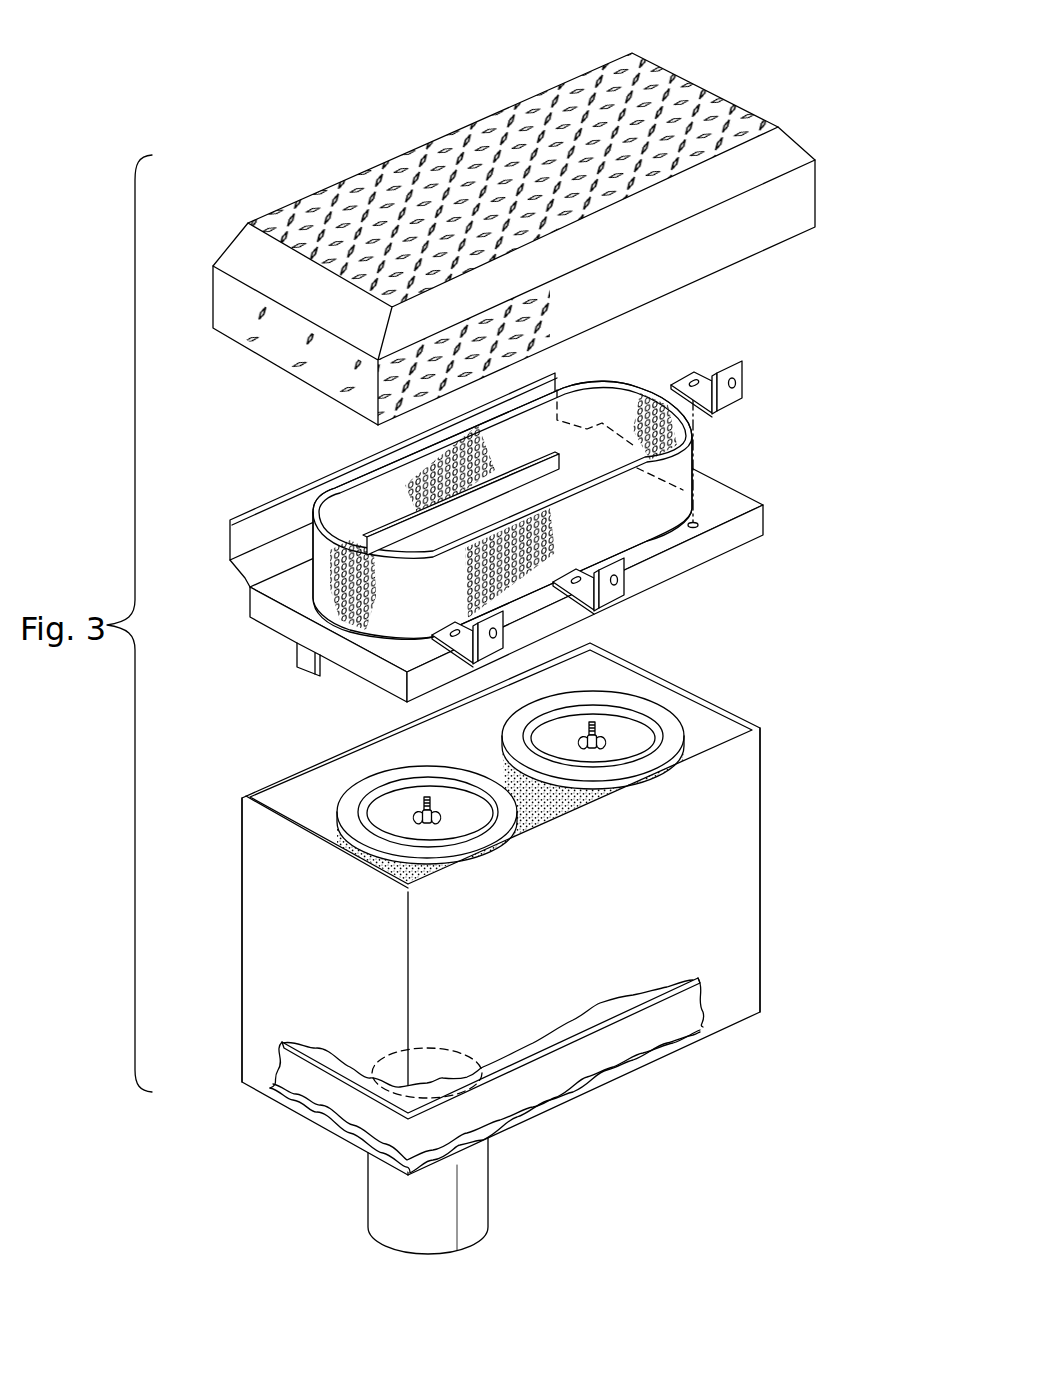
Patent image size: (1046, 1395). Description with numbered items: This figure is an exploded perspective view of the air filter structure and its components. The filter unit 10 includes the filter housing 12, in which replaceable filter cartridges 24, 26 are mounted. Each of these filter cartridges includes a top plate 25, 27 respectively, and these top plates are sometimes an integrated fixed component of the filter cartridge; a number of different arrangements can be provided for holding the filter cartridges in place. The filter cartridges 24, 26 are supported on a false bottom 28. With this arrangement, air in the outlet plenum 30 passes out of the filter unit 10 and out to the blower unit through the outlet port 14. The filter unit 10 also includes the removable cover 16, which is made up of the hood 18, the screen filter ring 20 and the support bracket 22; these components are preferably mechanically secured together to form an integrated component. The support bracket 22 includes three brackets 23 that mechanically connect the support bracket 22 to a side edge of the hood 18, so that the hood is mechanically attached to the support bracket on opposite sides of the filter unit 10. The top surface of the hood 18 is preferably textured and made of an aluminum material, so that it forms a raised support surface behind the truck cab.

The filter unit 10 is at (433, 930).
The filter housing 12 is at (727, 868).
The outlet port 14 is at (478, 1187).
The removable cover 16 is at (559, 421).
The hood 18 is at (645, 93).
The screen filter ring 20 is at (690, 466).
The support bracket 22 is at (718, 511).
The brackets 23 is at (740, 394).
The filter cartridge 24 is at (387, 860).
The top plate 25 is at (398, 808).
The filter cartridge 26 is at (558, 793).
The top plate 27 is at (607, 722).
The false bottom 28 is at (607, 1010).
The outlet plenum 30 is at (590, 1047).